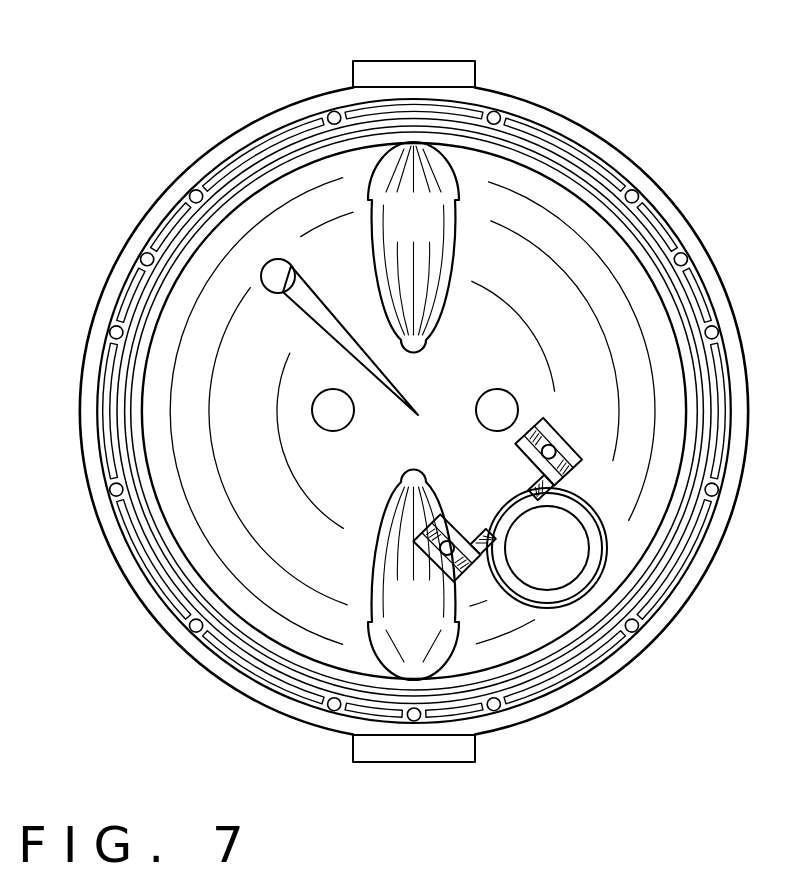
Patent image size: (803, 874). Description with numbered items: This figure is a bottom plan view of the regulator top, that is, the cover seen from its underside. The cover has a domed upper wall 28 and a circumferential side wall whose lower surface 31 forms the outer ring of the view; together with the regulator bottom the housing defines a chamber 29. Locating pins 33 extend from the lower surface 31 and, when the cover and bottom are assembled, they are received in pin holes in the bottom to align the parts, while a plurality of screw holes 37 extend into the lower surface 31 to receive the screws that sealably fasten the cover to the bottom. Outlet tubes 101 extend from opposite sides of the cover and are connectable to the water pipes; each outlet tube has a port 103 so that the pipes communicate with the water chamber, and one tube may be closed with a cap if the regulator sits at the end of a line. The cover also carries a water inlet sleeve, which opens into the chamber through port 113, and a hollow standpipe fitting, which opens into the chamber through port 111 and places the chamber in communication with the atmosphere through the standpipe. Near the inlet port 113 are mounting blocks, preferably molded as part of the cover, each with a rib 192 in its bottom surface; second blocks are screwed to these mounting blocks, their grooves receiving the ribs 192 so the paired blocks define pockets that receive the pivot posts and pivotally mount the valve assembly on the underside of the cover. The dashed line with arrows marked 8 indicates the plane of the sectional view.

The section line 8- 8 is at (413, 73).
The domed upper wall 28 is at (276, 503).
The chamber 29 is at (604, 138).
The lower surface 31 is at (246, 688).
The locating pins 33 is at (143, 251).
The screw holes 37 is at (104, 494).
The outlet tubes 101 is at (352, 84).
The ports 103 is at (438, 235).
The port 111 is at (276, 262).
The port 113 is at (566, 528).
The rib 192 is at (493, 462).